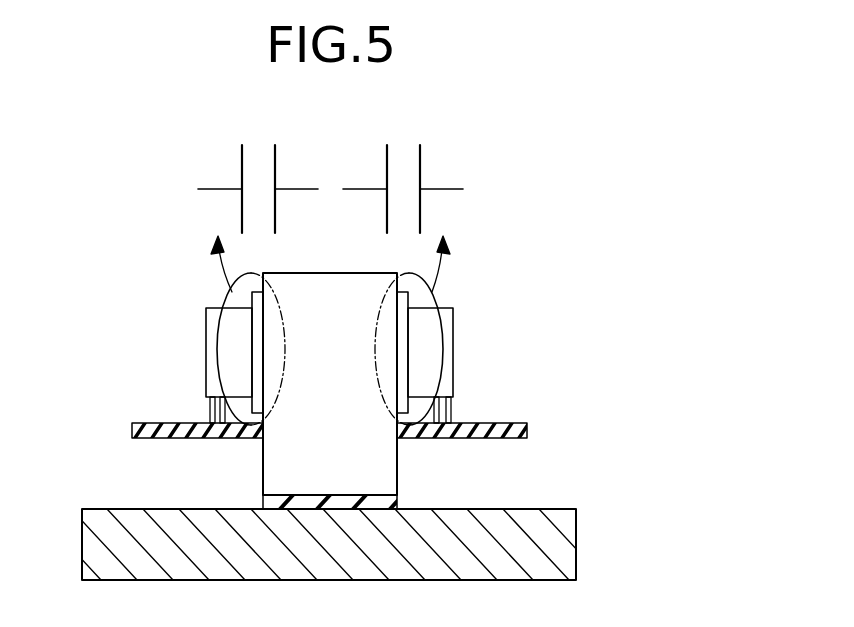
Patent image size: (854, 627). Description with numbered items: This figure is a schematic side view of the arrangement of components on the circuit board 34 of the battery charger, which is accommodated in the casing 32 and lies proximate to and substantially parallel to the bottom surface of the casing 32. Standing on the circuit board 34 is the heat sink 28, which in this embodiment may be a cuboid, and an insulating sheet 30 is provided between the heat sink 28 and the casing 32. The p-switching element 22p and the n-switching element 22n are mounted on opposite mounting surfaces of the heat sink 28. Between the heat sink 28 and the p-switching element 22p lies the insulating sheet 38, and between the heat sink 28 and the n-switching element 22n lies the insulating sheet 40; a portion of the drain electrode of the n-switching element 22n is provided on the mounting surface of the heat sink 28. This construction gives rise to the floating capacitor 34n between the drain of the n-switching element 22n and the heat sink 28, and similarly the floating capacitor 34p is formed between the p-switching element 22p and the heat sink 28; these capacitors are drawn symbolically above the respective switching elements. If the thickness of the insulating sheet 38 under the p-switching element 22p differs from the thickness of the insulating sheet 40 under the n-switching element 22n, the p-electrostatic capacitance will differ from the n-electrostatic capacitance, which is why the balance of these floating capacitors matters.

The p-switching element 22p is at (212, 307).
The n-switching element 22n is at (447, 307).
The heat sink 28 is at (398, 480).
The insulating sheet 30 is at (258, 503).
The casing 32 is at (105, 509).
The circuit board 34 is at (147, 422).
The floating capacitor 34p is at (240, 160).
The floating capacitor 34n is at (423, 160).
The insulating sheet 38 is at (250, 355).
The insulating sheet 40 is at (409, 355).